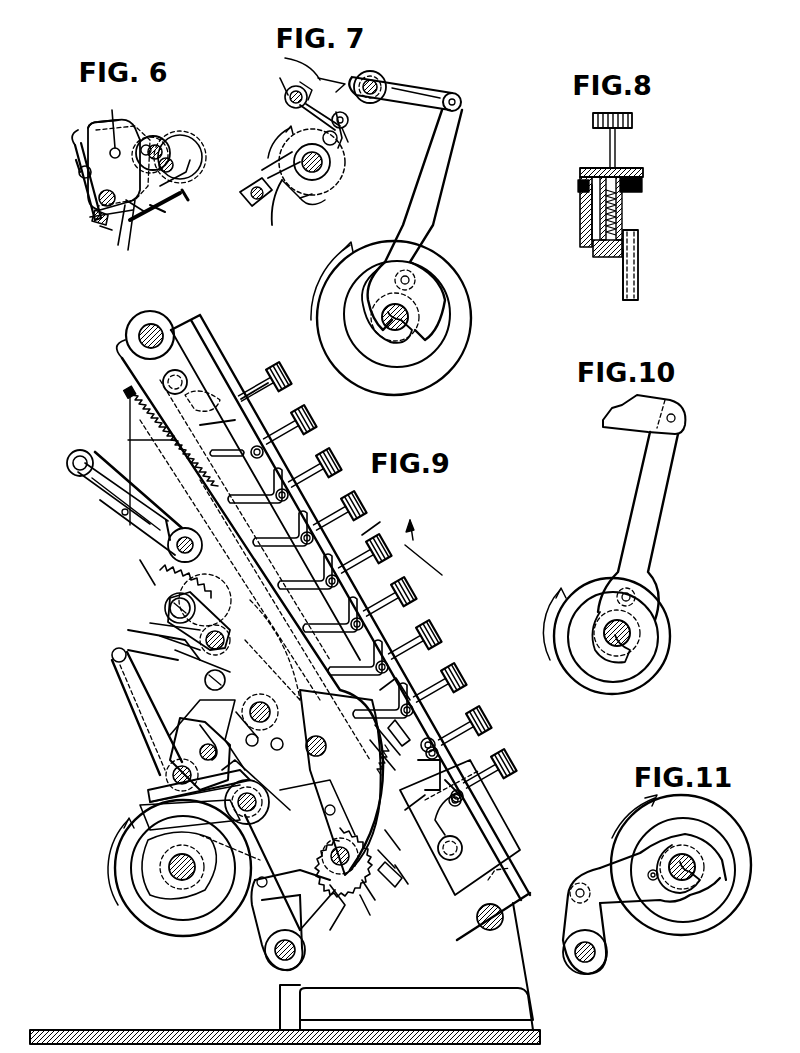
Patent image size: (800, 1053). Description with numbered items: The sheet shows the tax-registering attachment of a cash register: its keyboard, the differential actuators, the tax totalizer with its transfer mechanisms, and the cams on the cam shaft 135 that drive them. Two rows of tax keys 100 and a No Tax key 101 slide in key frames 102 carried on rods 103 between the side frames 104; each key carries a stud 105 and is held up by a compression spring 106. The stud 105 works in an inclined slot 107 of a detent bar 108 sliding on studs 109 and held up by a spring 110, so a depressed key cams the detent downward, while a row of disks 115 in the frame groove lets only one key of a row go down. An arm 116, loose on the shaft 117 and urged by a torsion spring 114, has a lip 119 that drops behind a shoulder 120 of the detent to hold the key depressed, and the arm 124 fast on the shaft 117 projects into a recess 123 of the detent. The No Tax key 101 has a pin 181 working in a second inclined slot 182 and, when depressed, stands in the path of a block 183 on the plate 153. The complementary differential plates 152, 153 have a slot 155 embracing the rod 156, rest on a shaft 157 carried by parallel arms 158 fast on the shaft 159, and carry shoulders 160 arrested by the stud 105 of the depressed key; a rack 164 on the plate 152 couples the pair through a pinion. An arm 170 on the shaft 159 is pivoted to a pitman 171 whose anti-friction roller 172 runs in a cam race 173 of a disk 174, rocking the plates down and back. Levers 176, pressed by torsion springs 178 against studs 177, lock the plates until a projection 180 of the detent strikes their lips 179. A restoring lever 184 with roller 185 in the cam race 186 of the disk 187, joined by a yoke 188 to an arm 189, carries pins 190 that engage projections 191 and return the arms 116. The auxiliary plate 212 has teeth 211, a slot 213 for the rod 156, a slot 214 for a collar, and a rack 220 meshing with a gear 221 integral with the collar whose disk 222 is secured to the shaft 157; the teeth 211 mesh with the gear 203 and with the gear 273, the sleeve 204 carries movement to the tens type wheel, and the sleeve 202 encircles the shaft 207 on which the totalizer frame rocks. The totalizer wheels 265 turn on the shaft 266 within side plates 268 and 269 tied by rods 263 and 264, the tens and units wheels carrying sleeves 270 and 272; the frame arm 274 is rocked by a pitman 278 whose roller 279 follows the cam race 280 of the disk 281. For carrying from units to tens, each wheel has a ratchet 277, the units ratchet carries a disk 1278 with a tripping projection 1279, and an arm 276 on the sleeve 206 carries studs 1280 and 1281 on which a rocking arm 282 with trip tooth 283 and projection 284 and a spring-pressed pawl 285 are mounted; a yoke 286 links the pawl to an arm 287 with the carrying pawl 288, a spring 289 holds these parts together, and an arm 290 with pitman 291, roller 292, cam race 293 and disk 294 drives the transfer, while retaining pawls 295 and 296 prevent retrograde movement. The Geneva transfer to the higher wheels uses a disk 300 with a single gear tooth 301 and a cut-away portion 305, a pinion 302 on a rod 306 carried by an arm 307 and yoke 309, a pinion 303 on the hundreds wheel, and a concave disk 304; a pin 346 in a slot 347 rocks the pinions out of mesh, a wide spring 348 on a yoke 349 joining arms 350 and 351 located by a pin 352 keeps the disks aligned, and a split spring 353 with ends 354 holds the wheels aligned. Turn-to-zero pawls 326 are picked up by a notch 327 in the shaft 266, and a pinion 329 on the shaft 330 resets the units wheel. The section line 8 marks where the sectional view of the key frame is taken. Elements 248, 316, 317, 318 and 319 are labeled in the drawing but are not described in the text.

In FIG. 9, the section line 8 is at (418, 540).
In FIG. 8, the adjusting knob 100 is at (632, 122).
In FIG. 9, the adjusting knob 100 is at (510, 755).
In FIG. 9, the slot 101 is at (296, 385).
In FIG. 8, the bracket plate 102 is at (640, 170).
In FIG. 9, the bracket plate 102 is at (505, 855).
In FIG. 9, the pivot bolt 103 is at (135, 340).
In FIG. 9, the housing 104 is at (528, 978).
In FIG. 8, the nut 105 is at (580, 184).
In FIG. 9, the nut 105 is at (432, 736).
In FIG. 8, the spring 106 is at (622, 215).
In FIG. 9, the spring 106 is at (445, 760).
In FIG. 9, the lever 107 is at (470, 806).
In FIG. 8, the pin 108 is at (585, 220).
In FIG. 9, the pin 108 is at (465, 815).
In FIG. 9, the pin 109 is at (163, 382).
In FIG. 9, the spring 110 is at (128, 400).
In FIG. 9, the lever 114 is at (215, 862).
In FIG. 8, the arm 115 is at (590, 232).
In FIG. 9, the arm 115 is at (392, 684).
In FIG. 9, the link 116 is at (392, 862).
In FIG. 9, the pivot 117 is at (245, 812).
In FIG. 9, the link 119 is at (402, 876).
In FIG. 9, the lever 120 is at (420, 810).
In FIG. 9, the spring 123 is at (378, 728).
In FIG. 9, the sector plate 124 is at (362, 760).
In FIG. 7, the shaft 135 is at (397, 332).
In FIG. 10, the shaft 135 is at (620, 650).
In FIG. 11, the shaft 135 is at (695, 860).
In FIG. 9, the shaft 135 is at (182, 882).
In FIG. 8, the bar 152 is at (636, 275).
In FIG. 8, the rod 153 is at (625, 290).
In FIG. 9, the rod 153 is at (140, 437).
In FIG. 9, the arm 155 is at (108, 494).
In FIG. 9, the pivot 156 is at (168, 547).
In FIG. 9, the link 157 is at (340, 905).
In FIG. 9, the rod 158 is at (330, 940).
In FIG. 11, the pivot 159 is at (596, 955).
In FIG. 9, the pivot 159 is at (298, 958).
In FIG. 9, the slot 160 is at (228, 455).
In FIG. 9, the bearing 164 is at (298, 898).
In FIG. 11, the lever 170 is at (605, 935).
In FIG. 9, the lever 170 is at (268, 920).
In FIG. 11, the arm 171 is at (608, 878).
In FIG. 9, the arm 171 is at (262, 900).
In FIG. 11, the cam 172 is at (665, 905).
In FIG. 11, the disc 173 is at (715, 920).
In FIG. 11, the wheel 174 is at (722, 930).
In FIG. 9, the pivot 176 is at (70, 467).
In FIG. 9, the pin 177 is at (74, 462).
In FIG. 9, the stop 178 is at (165, 530).
In FIG. 9, the screw 179 is at (190, 600).
In FIG. 9, the gear 180 is at (182, 590).
In FIG. 9, the lever 181 is at (235, 418).
In FIG. 9, the slot 182 is at (205, 395).
In FIG. 9, the arm 183 is at (115, 456).
In FIG. 9, the link 184 is at (160, 795).
In FIG. 9, the link 185 is at (150, 815).
In FIG. 9, the cam 186 is at (150, 912).
In FIG. 9, the wheel 187 is at (118, 900).
In FIG. 9, the rod 188 is at (232, 772).
In FIG. 9, the link 189 is at (205, 792).
In FIG. 9, the gear 190 is at (322, 842).
In FIG. 9, the lever 191 is at (305, 800).
In FIG. 9, the lever 202 is at (212, 615).
In FIG. 9, the link 203 is at (198, 668).
In FIG. 9, the pivot 204 is at (220, 630).
In FIG. 7, the pin 206 is at (385, 82).
In FIG. 9, the pin 206 is at (220, 636).
In FIG. 7, the arm 207 is at (430, 92).
In FIG. 9, the arm 207 is at (190, 645).
In FIG. 9, the pawl 211 is at (148, 575).
In FIG. 9, the link 212 is at (370, 900).
In FIG. 9, the rod 213 is at (125, 512).
In FIG. 9, the rod 214 is at (245, 860).
In FIG. 9, the lever 220 is at (395, 846).
In FIG. 9, the block 221 is at (392, 886).
In FIG. 9, the link 222 is at (368, 915).
In FIG. 9, the pin 248 is at (198, 750).
In FIG. 9, the screw 263 is at (170, 605).
In FIG. 6, the block 264 is at (96, 222).
In FIG. 7, the block 264 is at (252, 210).
In FIG. 9, the block 264 is at (388, 714).
In FIG. 6, the gear 265 is at (192, 140).
In FIG. 7, the gear 265 is at (338, 185).
In FIG. 6, the pin 266 is at (186, 172).
In FIG. 7, the pin 266 is at (320, 195).
In FIG. 9, the pin 266 is at (258, 700).
In FIG. 9, the slot 268 is at (205, 725).
In FIG. 9, the link 269 is at (168, 612).
In FIG. 9, the link 270 is at (244, 720).
In FIG. 7, the pawl 272 is at (335, 140).
In FIG. 9, the pawl 272 is at (250, 735).
In FIG. 9, the arm 273 is at (252, 675).
In FIG. 9, the pivot 274 is at (110, 652).
In FIG. 7, the roller 276 is at (374, 72).
In FIG. 7, the head 277 is at (330, 165).
In FIG. 10, the head 277 is at (632, 425).
In FIG. 10, the arm 278 is at (662, 478).
In FIG. 9, the arm 278 is at (126, 700).
In FIG. 10, the cam 279 is at (630, 598).
In FIG. 10, the disc 280 is at (655, 632).
In FIG. 10, the wheel 281 is at (660, 665).
In FIG. 7, the arm 282 is at (392, 93).
In FIG. 7, the link 283 is at (348, 128).
In FIG. 7, the link 284 is at (330, 80).
In FIG. 7, the pawl 285 is at (305, 82).
In FIG. 7, the spring 286 is at (282, 80).
In FIG. 7, the spring 287 is at (290, 60).
In FIG. 7, the link 288 is at (300, 112).
In FIG. 7, the pin 289 is at (290, 95).
In FIG. 7, the pivot 290 is at (462, 98).
In FIG. 9, the pivot 290 is at (150, 627).
In FIG. 7, the lever 291 is at (432, 190).
In FIG. 9, the lever 291 is at (128, 682).
In FIG. 7, the cam 292 is at (415, 280).
In FIG. 7, the disc 293 is at (450, 300).
In FIG. 7, the wheel 294 is at (462, 320).
In FIG. 7, the arm 295 is at (278, 158).
In FIG. 7, the link 296 is at (290, 200).
In FIG. 6, the bracket 300 is at (152, 135).
In FIG. 6, the pin 301 is at (140, 215).
In FIG. 6, the plate 302 is at (96, 124).
In FIG. 6, the gear 303 is at (160, 140).
In FIG. 6, the spring 304 is at (75, 133).
In FIG. 6, the pawl 305 is at (168, 206).
In FIG. 6, the pin 306 is at (114, 145).
In FIG. 6, the screw 307 is at (100, 199).
In FIG. 6, the pin 309 is at (106, 228).
In FIG. 9, the lever 316 is at (170, 730).
In FIG. 9, the pin 317 is at (172, 774).
In FIG. 9, the slot 318 is at (187, 718).
In FIG. 9, the pin 319 is at (380, 523).
In FIG. 6, the hub 326 is at (190, 157).
In FIG. 6, the pin 327 is at (145, 145).
In FIG. 9, the pawl 329 is at (275, 695).
In FIG. 9, the pin 330 is at (268, 744).
In FIG. 6, the hook 346 is at (78, 176).
In FIG. 6, the arm 347 is at (76, 163).
In FIG. 6, the arm 348 is at (76, 148).
In FIG. 6, the arm 349 is at (90, 214).
In FIG. 7, the spring 350 is at (274, 225).
In FIG. 6, the rod 351 is at (120, 240).
In FIG. 6, the pin 352 is at (160, 215).
In FIG. 6, the rod 353 is at (128, 250).
In FIG. 6, the stop 354 is at (185, 196).
In FIG. 7, the hub 1278 is at (335, 175).
In FIG. 7, the link 1279 is at (350, 135).
In FIG. 7, the pin 1280 is at (348, 118).
In FIG. 7, the roller 1281 is at (282, 102).